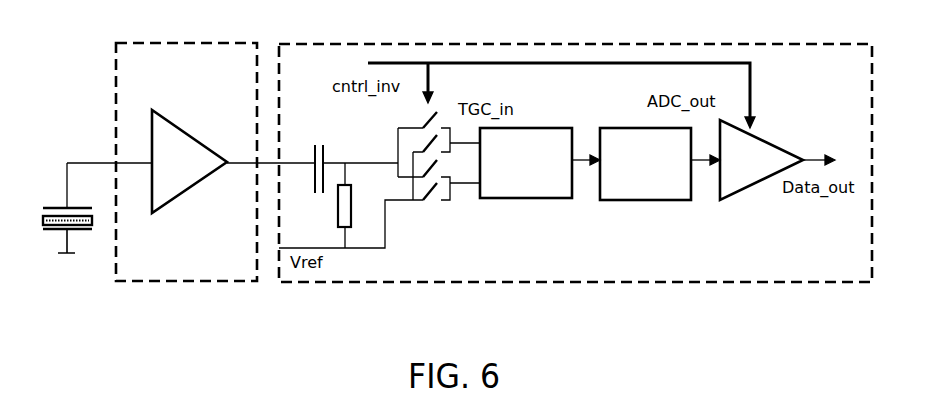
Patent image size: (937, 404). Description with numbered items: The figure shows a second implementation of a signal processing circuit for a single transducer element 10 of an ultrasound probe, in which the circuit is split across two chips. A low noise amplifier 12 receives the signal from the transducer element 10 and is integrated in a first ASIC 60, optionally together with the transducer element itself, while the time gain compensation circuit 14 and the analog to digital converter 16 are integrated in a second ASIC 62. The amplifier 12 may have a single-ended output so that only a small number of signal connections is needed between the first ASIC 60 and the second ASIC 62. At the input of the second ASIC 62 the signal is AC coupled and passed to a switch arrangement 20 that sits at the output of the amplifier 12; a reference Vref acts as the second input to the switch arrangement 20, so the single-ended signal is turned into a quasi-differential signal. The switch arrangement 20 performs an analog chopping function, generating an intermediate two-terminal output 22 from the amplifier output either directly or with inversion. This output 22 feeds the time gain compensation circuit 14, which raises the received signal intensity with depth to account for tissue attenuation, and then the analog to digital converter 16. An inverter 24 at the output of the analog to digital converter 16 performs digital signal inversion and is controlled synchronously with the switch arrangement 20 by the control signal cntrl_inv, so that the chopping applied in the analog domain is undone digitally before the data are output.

The transducer element 10 is at (48, 232).
The low noise amplifier 12 is at (180, 194).
The time gain compensation circuit 14 is at (537, 200).
The analog to digital converter 16 is at (653, 200).
The switch arrangement 20 is at (433, 218).
The intermediate two-terminal output 22 is at (467, 208).
The inverter 24 is at (743, 182).
The first ASIC 60 is at (177, 44).
The second ASIC 62 is at (628, 44).